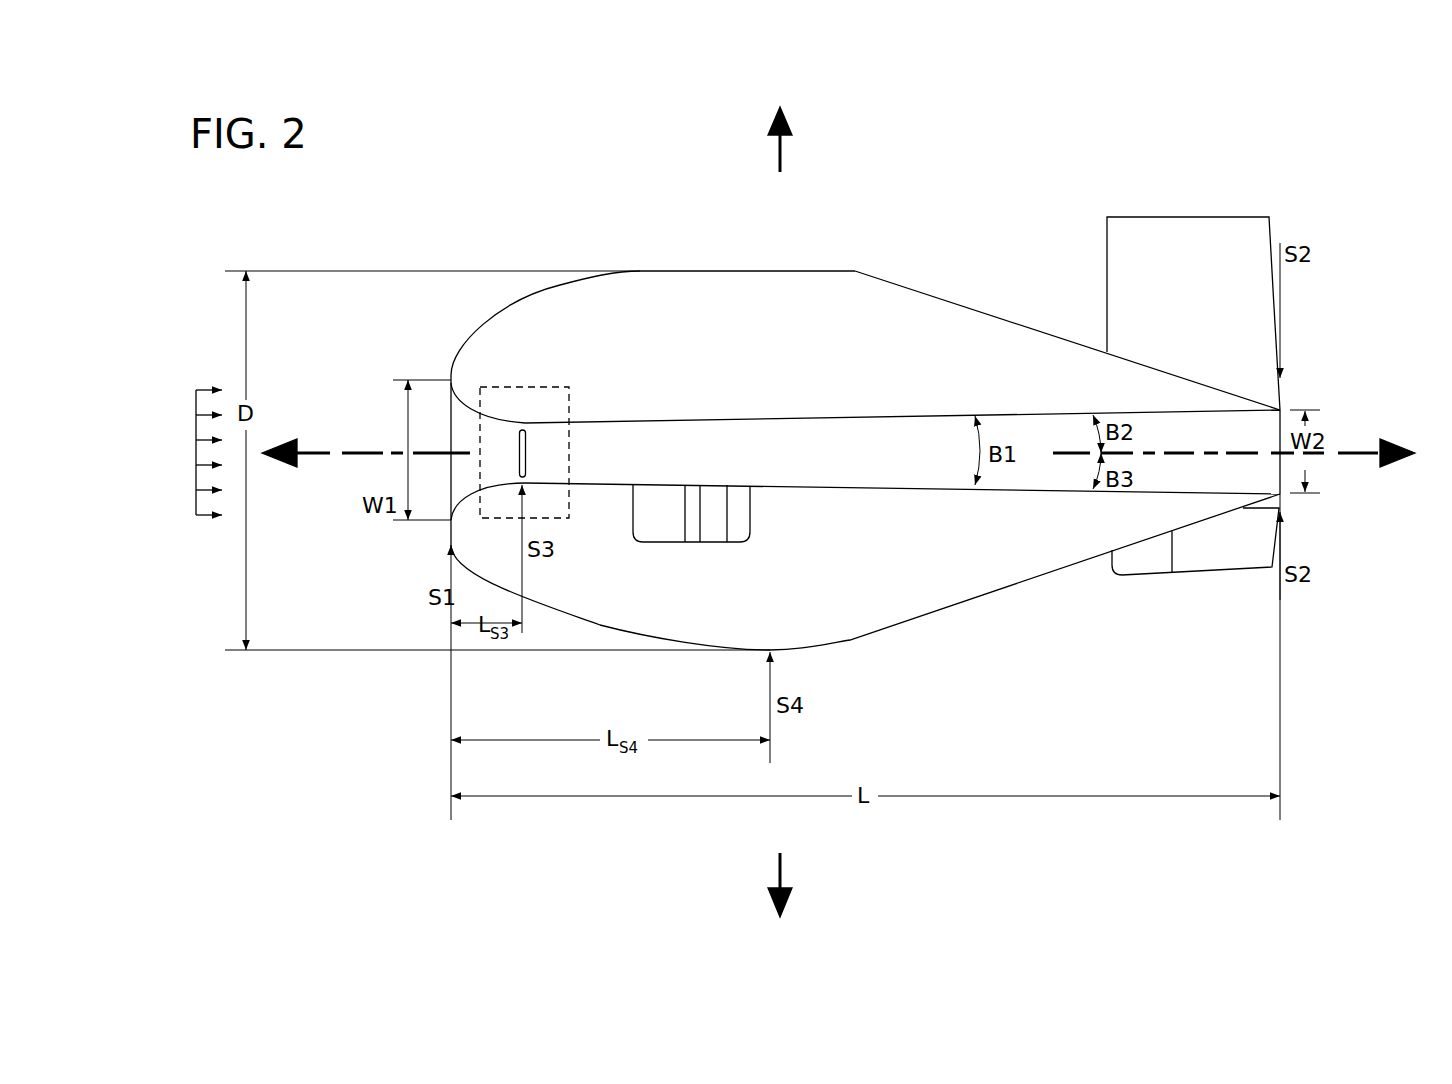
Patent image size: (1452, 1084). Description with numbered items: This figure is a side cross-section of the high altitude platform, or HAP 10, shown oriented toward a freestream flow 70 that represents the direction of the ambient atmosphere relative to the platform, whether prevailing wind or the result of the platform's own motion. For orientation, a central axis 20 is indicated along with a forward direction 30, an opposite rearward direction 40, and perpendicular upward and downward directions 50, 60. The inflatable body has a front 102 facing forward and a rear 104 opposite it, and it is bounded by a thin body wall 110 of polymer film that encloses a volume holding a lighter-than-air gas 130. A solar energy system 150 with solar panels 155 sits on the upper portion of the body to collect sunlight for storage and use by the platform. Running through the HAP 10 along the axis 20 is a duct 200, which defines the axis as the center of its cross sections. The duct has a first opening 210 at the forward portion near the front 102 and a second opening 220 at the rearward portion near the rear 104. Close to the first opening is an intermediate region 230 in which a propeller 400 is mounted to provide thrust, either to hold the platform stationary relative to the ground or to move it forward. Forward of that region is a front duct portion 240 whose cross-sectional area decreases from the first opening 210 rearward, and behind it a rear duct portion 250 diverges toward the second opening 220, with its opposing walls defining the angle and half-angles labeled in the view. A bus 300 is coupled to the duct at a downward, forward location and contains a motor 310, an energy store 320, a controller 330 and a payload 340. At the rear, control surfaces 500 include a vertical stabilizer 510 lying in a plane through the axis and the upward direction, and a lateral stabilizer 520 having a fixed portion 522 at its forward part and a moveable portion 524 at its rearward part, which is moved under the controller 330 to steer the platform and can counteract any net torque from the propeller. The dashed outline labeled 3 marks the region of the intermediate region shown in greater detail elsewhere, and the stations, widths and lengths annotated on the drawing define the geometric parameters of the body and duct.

The high altitude platform 10 is at (497, 212).
The central axis 20 is at (372, 451).
The forward direction 30 is at (297, 457).
The rearward direction 40 is at (1394, 458).
The upward direction 50 is at (782, 150).
The downward direction 60 is at (782, 876).
The freestream flow 70 is at (216, 537).
The front 102 is at (425, 338).
The rear 104 is at (1332, 365).
The body wall 110 is at (520, 303).
The lighter-than-air gas 130 is at (490, 341).
The solar energy system 150 is at (783, 264).
The solar panels 155 is at (940, 275).
The duct 200 is at (632, 463).
The first opening 210 is at (445, 433).
The second opening 220 is at (1287, 462).
The intermediate region 230 is at (531, 421).
The front duct portion 240 is at (467, 466).
The rear duct portion 250 is at (796, 436).
The bus 300 is at (695, 576).
The motor 310 is at (673, 523).
The energy store 320 is at (692, 543).
The controller 330 is at (712, 543).
The payload 340 is at (745, 503).
The propeller 400 is at (528, 460).
The control surfaces 500 is at (1253, 210).
The vertical stabilizer 510 is at (1210, 248).
The lateral stabilizer 520 is at (1188, 600).
The fixed portion 522 is at (1147, 575).
The moveable portion 524 is at (1247, 557).
The detail view region 3 is at (540, 382).